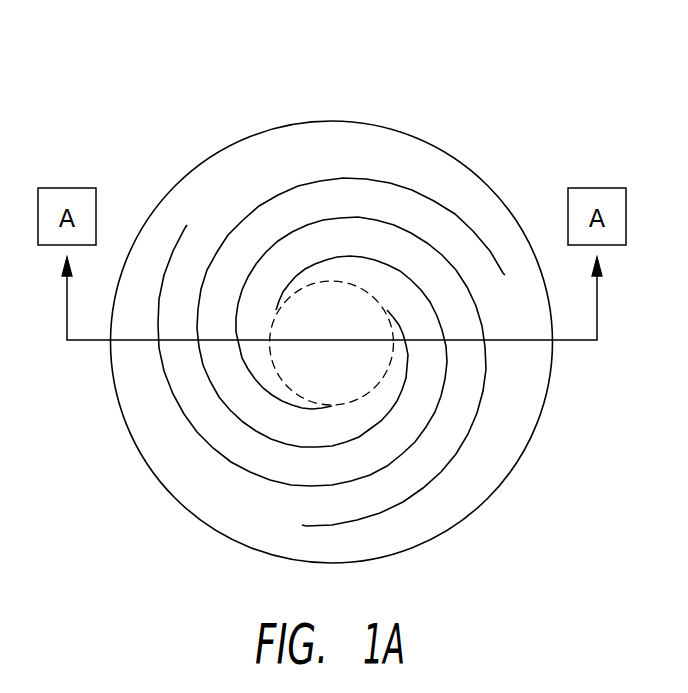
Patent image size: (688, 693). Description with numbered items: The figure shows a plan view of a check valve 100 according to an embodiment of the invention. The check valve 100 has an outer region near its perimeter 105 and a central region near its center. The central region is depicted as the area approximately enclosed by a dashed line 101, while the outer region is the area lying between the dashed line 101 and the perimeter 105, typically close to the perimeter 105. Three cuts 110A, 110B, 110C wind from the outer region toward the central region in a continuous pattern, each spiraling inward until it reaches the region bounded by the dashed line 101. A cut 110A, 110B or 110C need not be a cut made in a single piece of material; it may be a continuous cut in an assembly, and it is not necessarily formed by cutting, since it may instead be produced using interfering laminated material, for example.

The check valve 100 is at (407, 69).
The dashed line 101 is at (332, 404).
The perimeter 105 is at (493, 490).
The cut 110A is at (483, 387).
The cut 110B is at (262, 478).
The cut 110C is at (285, 190).